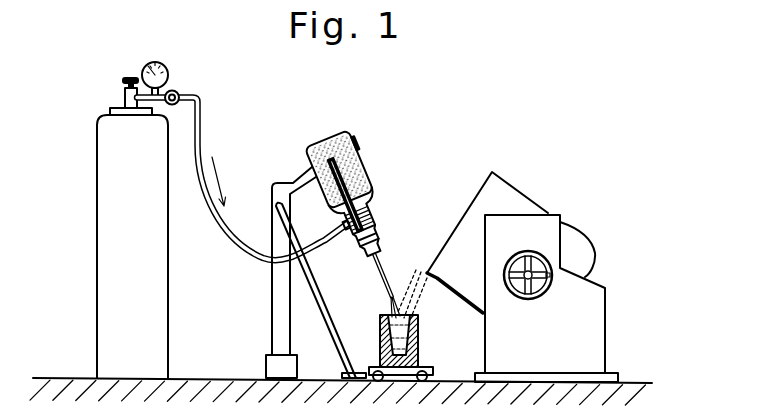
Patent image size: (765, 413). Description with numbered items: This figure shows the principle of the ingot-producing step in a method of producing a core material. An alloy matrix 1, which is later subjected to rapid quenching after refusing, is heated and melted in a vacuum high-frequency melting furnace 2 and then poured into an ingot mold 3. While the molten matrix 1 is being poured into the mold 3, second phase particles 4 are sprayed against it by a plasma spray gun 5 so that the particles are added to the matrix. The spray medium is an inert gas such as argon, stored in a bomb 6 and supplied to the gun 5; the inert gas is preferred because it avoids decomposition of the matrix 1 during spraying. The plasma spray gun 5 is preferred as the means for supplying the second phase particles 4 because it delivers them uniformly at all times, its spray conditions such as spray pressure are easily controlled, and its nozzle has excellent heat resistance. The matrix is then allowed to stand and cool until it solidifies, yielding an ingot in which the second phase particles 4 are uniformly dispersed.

The matrix 1 is at (419, 296).
The vacuum high-frequency melting furnace 2 is at (605, 327).
The ingot mold 3 is at (418, 350).
The second phase particles 4 is at (370, 180).
The plasma spray gun 5 is at (348, 130).
The bomb 6 is at (97, 212).